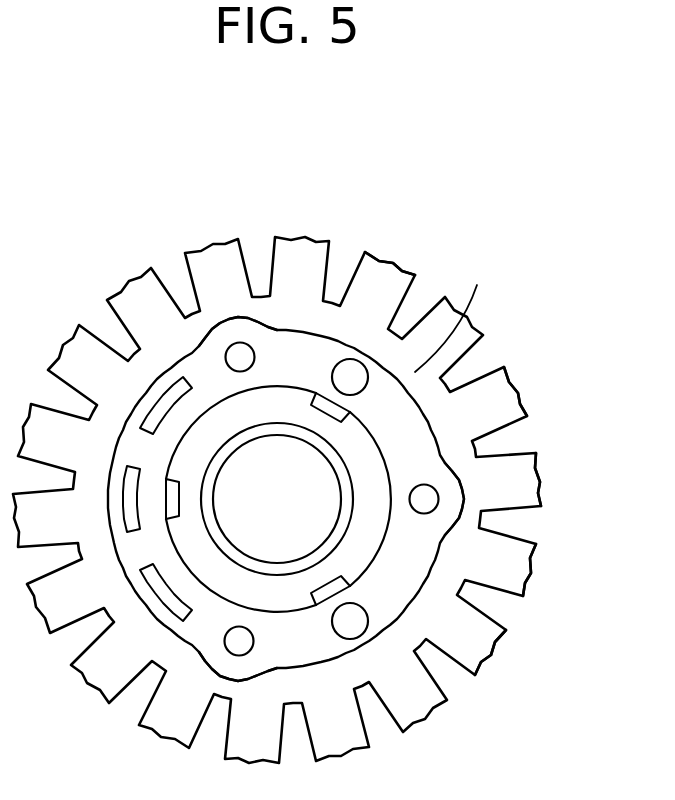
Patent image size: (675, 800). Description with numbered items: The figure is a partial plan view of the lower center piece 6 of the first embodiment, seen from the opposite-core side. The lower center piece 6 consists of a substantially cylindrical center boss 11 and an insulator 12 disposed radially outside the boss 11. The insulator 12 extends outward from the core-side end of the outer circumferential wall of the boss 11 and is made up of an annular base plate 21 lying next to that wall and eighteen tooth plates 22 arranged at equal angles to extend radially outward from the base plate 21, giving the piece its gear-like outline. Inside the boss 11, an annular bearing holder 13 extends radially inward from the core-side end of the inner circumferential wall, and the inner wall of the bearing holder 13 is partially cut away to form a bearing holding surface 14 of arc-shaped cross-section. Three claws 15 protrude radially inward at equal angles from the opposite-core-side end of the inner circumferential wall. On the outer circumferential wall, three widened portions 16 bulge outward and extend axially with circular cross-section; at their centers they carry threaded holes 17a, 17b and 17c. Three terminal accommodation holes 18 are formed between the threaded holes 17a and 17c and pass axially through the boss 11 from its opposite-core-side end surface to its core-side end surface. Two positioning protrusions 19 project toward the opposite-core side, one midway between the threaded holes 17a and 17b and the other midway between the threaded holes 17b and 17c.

The lower center piece 6 is at (276, 214).
The center boss 11 is at (423, 414).
The insulator 12 is at (433, 198).
The bearing holder 13 is at (357, 426).
The bearing holding surface 14 is at (308, 441).
The claws 15 is at (313, 395).
The widened portions 16 is at (257, 315).
The threaded hole 17a is at (246, 348).
The threaded hole 17b is at (423, 484).
The threaded hole 17c is at (247, 637).
The terminal accommodation holes 18 is at (160, 396).
The positioning protrusions 19 is at (352, 358).
The base plate 21 is at (455, 311).
The tooth plates 22 is at (398, 267).